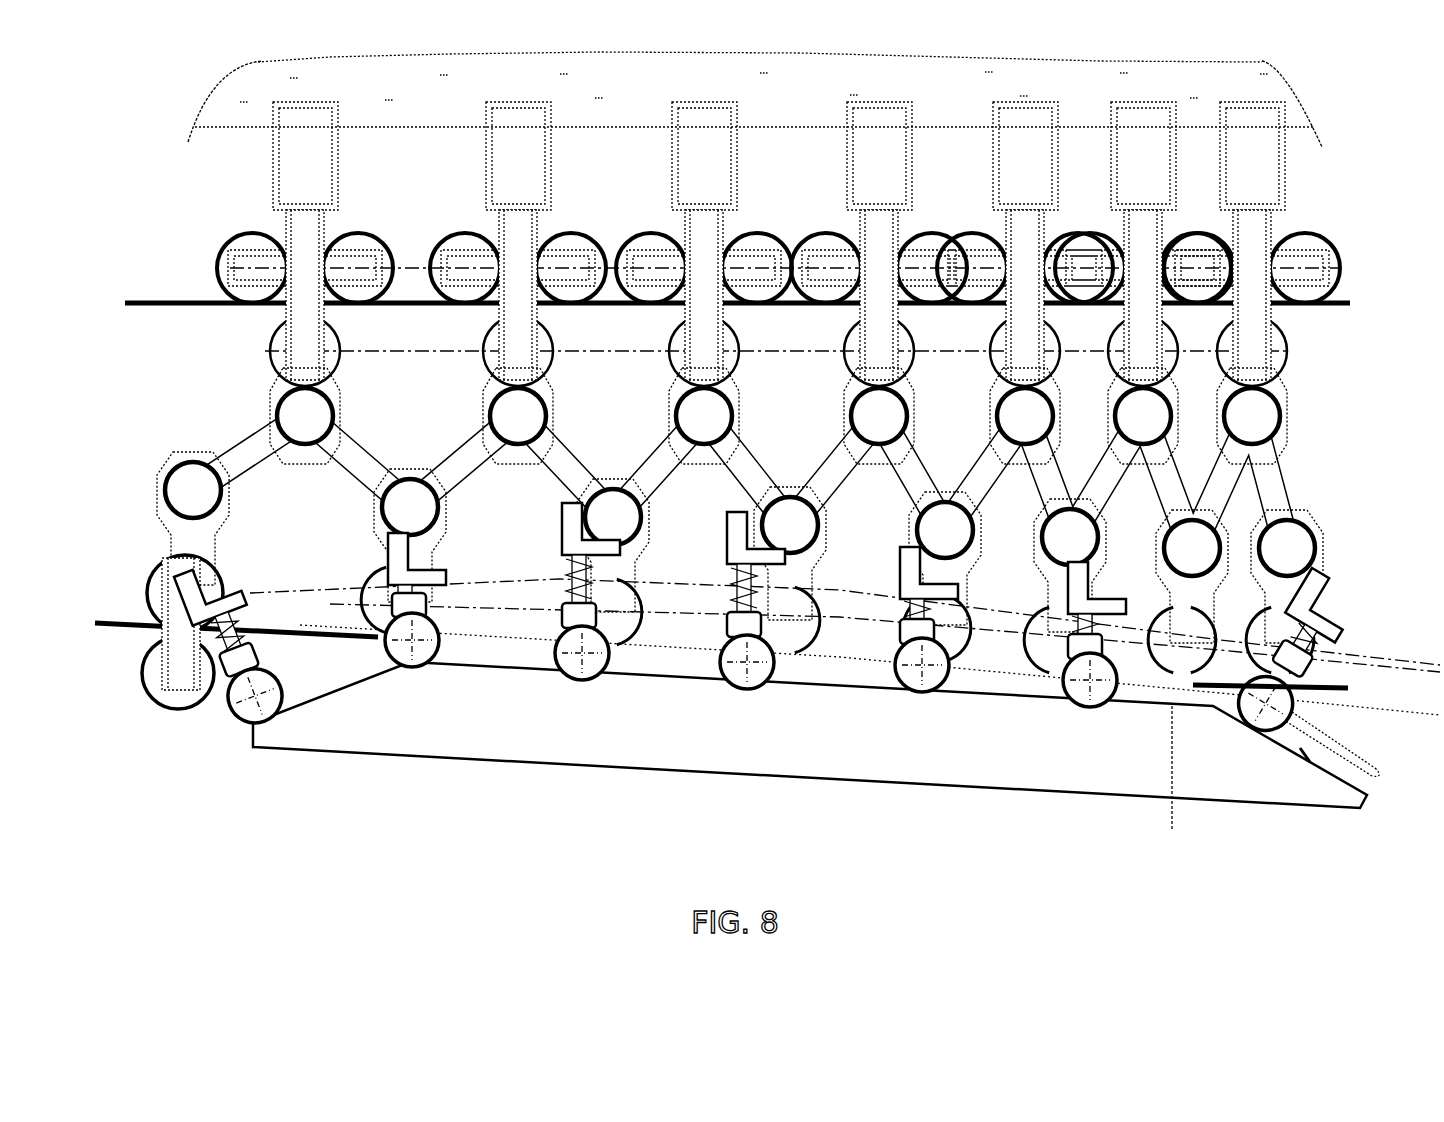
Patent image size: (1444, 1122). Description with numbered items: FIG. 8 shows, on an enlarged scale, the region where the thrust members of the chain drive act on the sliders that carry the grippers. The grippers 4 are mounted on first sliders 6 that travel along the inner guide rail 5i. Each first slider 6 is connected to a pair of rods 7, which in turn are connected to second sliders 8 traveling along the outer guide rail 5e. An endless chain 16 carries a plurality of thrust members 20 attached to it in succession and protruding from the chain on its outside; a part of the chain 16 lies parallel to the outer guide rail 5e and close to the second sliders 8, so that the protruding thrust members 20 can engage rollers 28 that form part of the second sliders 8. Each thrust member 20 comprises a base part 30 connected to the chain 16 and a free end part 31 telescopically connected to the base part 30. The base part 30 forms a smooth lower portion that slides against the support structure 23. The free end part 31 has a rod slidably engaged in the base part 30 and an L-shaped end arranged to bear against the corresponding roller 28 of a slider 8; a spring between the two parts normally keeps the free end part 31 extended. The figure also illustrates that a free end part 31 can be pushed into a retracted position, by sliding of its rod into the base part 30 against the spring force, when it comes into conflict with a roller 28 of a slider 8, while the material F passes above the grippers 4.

The fabric F is at (257, 85).
The gripper 4 is at (672, 155).
The first slider 6 is at (293, 257).
The inner guide rail 5i is at (190, 300).
The outer guide rail 5e is at (130, 623).
The rod 7 is at (237, 445).
The second slider 8 is at (167, 647).
The thrust member 20 is at (345, 645).
The roller 28 is at (643, 530).
The support structure 23 is at (1073, 762).
The endless chain 16 is at (1230, 786).
The base part 30 is at (1290, 690).
The free end part 31 is at (1335, 587).